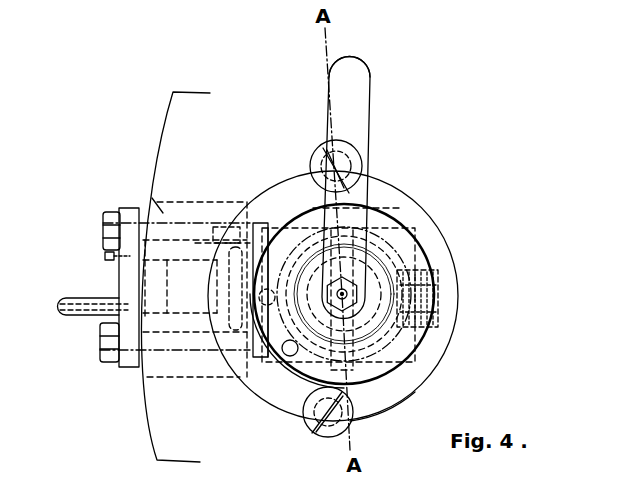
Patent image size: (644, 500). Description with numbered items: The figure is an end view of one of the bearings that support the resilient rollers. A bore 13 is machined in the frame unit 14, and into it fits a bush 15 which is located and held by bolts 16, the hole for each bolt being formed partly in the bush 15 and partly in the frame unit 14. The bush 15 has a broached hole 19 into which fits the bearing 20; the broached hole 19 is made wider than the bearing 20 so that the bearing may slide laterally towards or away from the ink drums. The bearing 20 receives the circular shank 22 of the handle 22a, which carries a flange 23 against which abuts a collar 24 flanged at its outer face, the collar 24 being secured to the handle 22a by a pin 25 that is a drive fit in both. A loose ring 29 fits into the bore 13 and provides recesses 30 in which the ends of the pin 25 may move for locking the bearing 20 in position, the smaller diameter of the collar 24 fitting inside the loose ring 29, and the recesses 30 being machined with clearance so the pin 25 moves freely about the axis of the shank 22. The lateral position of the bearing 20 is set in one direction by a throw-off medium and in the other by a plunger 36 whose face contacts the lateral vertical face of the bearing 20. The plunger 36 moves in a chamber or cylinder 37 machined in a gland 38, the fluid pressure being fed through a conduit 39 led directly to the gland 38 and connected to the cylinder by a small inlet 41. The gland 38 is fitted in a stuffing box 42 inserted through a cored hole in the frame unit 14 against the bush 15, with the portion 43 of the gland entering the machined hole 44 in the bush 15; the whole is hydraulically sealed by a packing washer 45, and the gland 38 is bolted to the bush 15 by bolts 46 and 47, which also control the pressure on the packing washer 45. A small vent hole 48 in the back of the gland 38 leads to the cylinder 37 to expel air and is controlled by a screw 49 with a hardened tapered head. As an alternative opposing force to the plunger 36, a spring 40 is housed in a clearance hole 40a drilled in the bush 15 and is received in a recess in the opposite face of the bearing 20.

The bore 13 is at (415, 392).
The frame unit 14 is at (459, 338).
The bush 15 is at (292, 396).
The bolts 16 is at (320, 160).
The broached hole 19 is at (258, 352).
The bearing 20 is at (270, 349).
The circular shank 22 is at (359, 287).
The handle 22a is at (350, 97).
The flange 23 is at (365, 313).
The collar 24 is at (377, 217).
The pin 25 is at (352, 203).
The loose ring 29 is at (455, 327).
The recesses 30 is at (389, 220).
The plunger 36 is at (203, 303).
The chamber or cylinder 37 is at (112, 350).
The gland 38 is at (127, 355).
The conduit 39 is at (75, 303).
The spring 40 is at (445, 277).
The clearance hole 40a is at (439, 300).
The small inlet 41 is at (97, 318).
The stuffing box 42 is at (157, 211).
The portion of the gland 43 is at (213, 247).
The machined hole 44 is at (219, 250).
The packing washer 45 is at (247, 203).
The bolt 46 is at (107, 338).
The bolt 47 is at (108, 228).
The vent hole 48 is at (133, 247).
The screw 49 is at (103, 255).